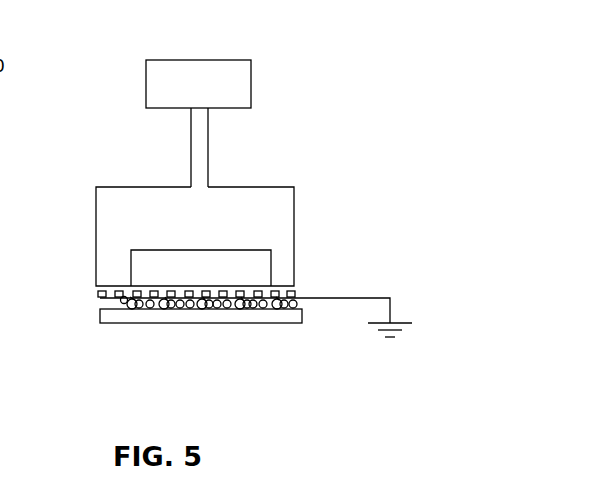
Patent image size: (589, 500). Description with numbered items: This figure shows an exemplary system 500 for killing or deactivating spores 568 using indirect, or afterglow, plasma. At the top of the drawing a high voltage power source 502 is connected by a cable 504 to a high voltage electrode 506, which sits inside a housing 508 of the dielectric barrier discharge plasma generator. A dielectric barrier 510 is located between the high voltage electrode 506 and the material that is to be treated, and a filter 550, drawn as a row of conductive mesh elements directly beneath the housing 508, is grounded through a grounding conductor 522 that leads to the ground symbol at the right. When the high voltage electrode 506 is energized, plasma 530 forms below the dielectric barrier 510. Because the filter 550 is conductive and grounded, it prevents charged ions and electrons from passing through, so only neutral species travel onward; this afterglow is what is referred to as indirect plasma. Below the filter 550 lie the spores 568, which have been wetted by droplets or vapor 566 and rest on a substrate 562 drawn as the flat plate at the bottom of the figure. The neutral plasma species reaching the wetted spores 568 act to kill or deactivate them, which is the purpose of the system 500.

The system 500 is at (340, 97).
The high voltage power source 502 is at (251, 60).
The cable 504 is at (208, 145).
The high voltage electrode 506 is at (271, 262).
The housing 508 is at (294, 213).
The dielectric barrier 510 is at (295, 283).
The grounding conductor 522 is at (390, 312).
The plasma 530 is at (120, 299).
The filter 550 is at (100, 295).
The substrate 562 is at (237, 323).
The droplets or vapor 566 is at (127, 300).
The spores 568 is at (162, 307).